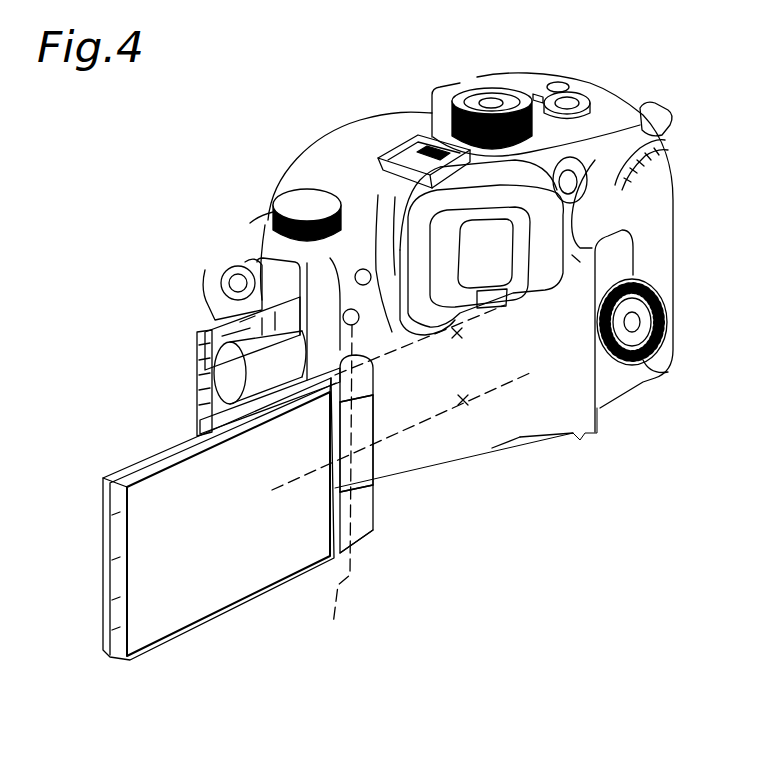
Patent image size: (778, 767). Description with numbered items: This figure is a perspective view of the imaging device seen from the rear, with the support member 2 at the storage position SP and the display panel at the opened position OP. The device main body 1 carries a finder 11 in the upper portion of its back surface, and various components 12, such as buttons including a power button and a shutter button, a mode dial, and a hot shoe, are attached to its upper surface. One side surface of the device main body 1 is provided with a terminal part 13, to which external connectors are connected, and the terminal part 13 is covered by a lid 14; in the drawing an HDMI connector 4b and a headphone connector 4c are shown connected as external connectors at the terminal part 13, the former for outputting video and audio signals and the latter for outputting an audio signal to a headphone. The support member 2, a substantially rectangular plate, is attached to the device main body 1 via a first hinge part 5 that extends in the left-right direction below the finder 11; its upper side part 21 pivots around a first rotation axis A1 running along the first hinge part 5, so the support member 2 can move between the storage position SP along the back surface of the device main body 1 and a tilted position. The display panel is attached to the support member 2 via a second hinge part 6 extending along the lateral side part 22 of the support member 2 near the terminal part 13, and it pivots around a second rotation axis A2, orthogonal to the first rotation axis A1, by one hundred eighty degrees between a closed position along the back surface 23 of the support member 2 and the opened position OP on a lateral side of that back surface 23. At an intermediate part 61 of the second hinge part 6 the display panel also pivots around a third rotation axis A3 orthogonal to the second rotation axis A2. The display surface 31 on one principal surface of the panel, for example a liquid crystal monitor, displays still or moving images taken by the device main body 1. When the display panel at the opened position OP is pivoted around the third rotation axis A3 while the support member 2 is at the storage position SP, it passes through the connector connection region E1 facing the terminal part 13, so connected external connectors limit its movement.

The device main body 1 is at (657, 213).
The support member 2 is at (492, 448).
The first hinge part 5 is at (580, 263).
The second hinge part 6 is at (353, 530).
The finder 11 is at (487, 240).
The various components 12 is at (579, 74).
The terminal part 13 is at (213, 318).
The lid 14 is at (213, 338).
The upper side part 21 is at (392, 332).
The lateral side part 22 is at (381, 544).
The back surface 23 is at (520, 437).
The display surface 31 is at (200, 590).
The intermediate part 61 is at (360, 467).
The HDMI connector 4b is at (212, 412).
The headphone connector 4c is at (227, 380).
The connector connection region E1 is at (235, 340).
The first rotation axis A1 is at (462, 334).
The second rotation axis A2 is at (332, 494).
The third rotation axis A3 is at (467, 407).
The storage position SP is at (575, 460).
The opened position OP is at (268, 615).